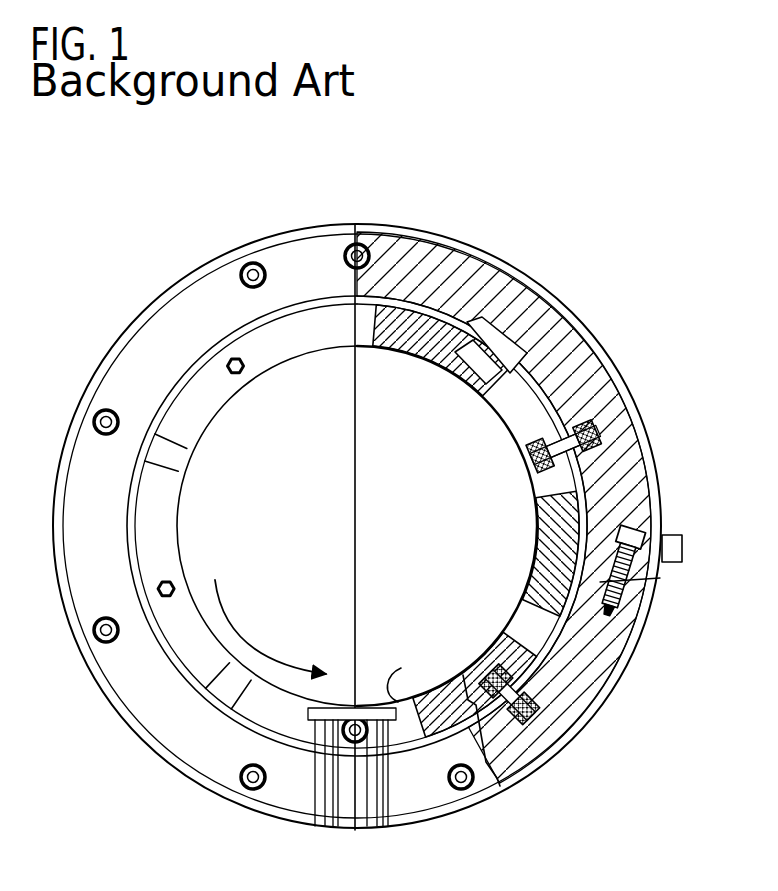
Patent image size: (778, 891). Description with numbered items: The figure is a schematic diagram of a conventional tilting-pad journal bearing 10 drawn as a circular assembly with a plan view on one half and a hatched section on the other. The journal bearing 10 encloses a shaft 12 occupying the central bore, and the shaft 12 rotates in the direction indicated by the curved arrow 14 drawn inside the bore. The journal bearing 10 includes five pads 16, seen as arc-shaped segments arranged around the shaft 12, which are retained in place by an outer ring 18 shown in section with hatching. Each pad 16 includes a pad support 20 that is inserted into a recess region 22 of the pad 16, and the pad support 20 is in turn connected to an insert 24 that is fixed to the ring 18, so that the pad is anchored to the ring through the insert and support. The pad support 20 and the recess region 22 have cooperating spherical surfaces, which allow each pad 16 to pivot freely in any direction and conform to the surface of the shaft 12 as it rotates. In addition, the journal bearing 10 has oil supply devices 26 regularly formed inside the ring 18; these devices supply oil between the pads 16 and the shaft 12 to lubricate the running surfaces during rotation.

The journal bearing 10 is at (166, 284).
The shaft 12 is at (306, 574).
The arrow 14 is at (246, 627).
The pad 16 is at (251, 396).
The ring 18 is at (450, 268).
The pad support 20 is at (478, 368).
The recess region 22 is at (493, 386).
The insert 24 is at (500, 335).
The oil supply device 26 is at (547, 718).